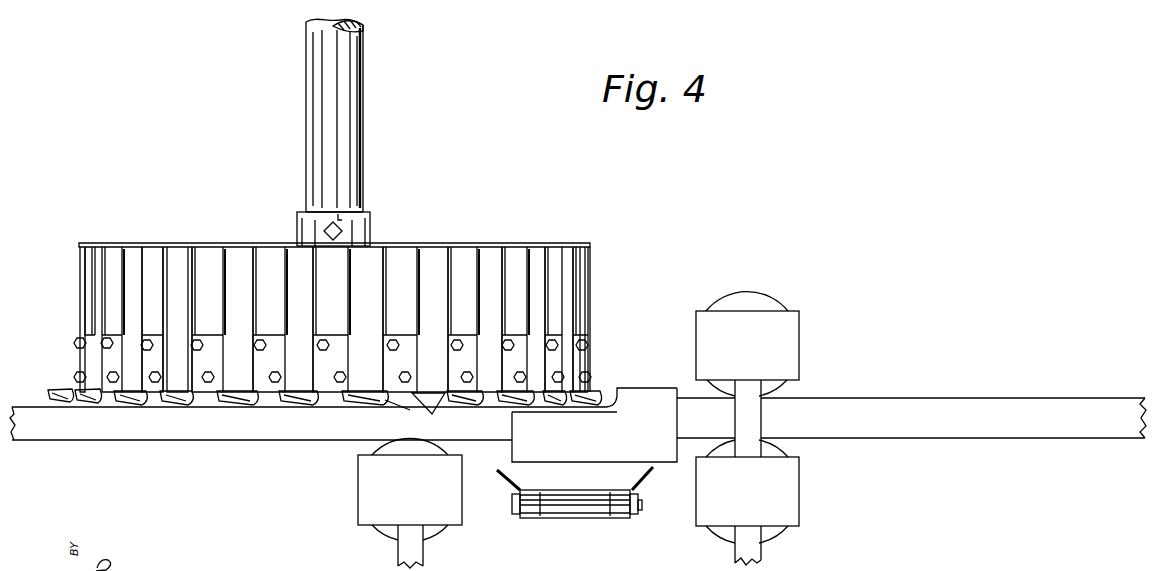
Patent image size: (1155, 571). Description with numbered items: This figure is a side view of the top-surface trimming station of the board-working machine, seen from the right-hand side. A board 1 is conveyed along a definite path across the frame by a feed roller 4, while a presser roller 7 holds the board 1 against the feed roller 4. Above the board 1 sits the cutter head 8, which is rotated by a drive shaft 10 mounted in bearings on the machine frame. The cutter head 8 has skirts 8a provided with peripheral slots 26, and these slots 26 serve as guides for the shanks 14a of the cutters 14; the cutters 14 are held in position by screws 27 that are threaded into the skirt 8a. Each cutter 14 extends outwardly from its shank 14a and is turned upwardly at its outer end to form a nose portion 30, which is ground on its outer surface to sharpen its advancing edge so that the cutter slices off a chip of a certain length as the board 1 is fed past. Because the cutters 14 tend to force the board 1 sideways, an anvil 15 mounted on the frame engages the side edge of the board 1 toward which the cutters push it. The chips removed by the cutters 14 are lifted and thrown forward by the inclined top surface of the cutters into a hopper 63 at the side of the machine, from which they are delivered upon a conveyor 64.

The board 1 is at (950, 400).
The feed roller 4 is at (451, 451).
The presser roller 7 is at (768, 308).
The cutter head 8 is at (590, 243).
The skirt 8a is at (180, 252).
The drive shaft 10 is at (353, 167).
The cutter 14 is at (176, 404).
The shank 14a is at (393, 334).
The anvil 15 is at (642, 437).
The peripheral slots 26 is at (277, 252).
The screws 27 is at (74, 377).
The nose portion 30 is at (118, 397).
The hopper 63 is at (508, 481).
The conveyor 64 is at (600, 519).